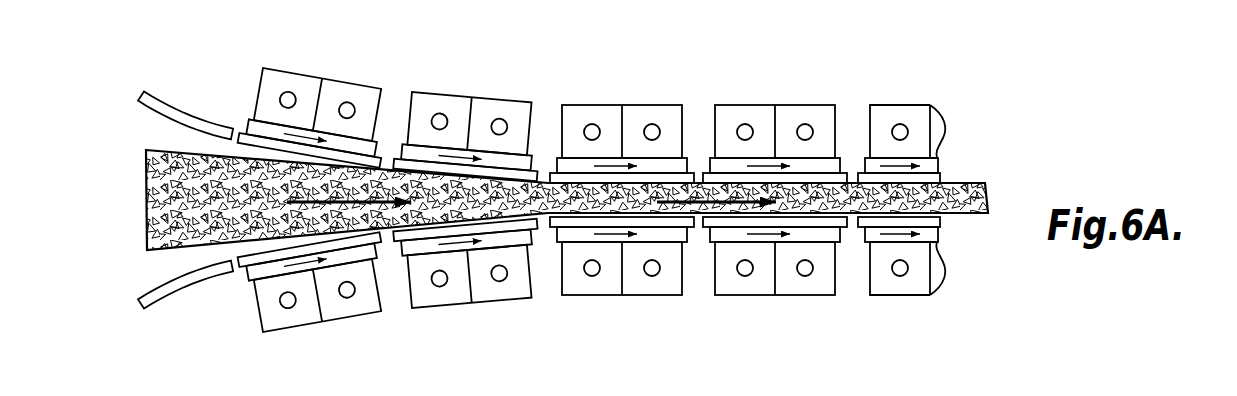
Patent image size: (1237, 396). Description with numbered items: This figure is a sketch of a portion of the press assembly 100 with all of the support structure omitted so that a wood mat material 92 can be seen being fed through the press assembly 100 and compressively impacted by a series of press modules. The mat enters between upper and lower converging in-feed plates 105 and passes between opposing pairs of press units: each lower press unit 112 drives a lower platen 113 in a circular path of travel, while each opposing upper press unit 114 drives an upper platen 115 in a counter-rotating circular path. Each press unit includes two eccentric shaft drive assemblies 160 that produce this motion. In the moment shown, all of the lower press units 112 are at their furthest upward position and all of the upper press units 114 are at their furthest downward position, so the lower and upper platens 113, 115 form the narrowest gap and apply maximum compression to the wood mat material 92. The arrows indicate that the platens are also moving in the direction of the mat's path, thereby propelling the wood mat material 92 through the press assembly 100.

The press assembly 100 is at (972, 90).
The wood mat material 92 is at (967, 183).
The converging in-feed plates 105 is at (186, 107).
The upper press unit 114 is at (490, 95).
The lower press unit 112 is at (490, 308).
The upper platen 115 is at (687, 180).
The lower platen 113 is at (692, 222).
The eccentric shaft drive assembly 160 is at (440, 112).